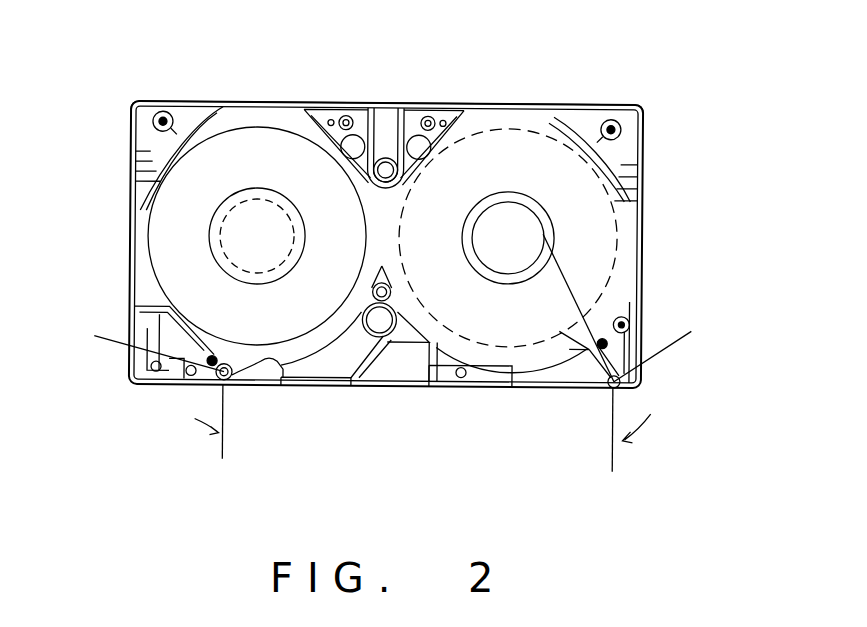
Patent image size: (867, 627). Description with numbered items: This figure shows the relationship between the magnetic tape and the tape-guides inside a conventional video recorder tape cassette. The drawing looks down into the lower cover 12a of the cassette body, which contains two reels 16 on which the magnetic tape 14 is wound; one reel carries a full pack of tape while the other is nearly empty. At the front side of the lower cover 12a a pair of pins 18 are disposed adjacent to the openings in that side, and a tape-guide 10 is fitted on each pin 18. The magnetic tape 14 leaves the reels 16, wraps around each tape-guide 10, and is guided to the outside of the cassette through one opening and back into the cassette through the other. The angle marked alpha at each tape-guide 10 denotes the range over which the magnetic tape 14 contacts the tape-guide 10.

The tape-guide 10 is at (238, 384).
The lower cover 12a is at (643, 113).
The magnetic tape 14 is at (228, 152).
The reel 16 is at (254, 192).
The pin 18 is at (232, 367).